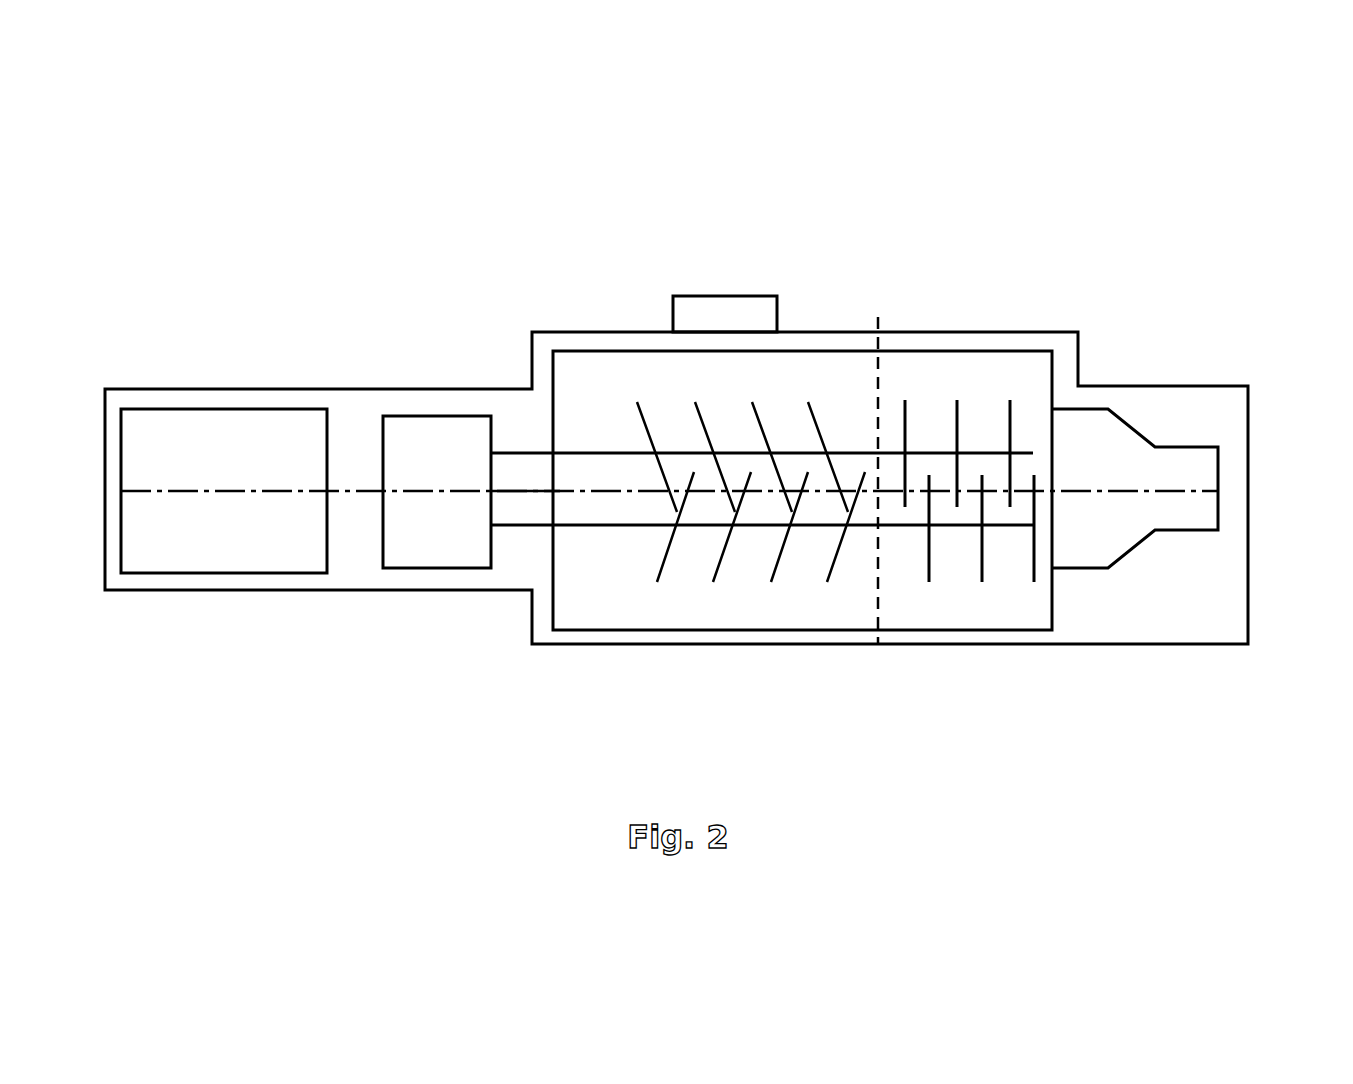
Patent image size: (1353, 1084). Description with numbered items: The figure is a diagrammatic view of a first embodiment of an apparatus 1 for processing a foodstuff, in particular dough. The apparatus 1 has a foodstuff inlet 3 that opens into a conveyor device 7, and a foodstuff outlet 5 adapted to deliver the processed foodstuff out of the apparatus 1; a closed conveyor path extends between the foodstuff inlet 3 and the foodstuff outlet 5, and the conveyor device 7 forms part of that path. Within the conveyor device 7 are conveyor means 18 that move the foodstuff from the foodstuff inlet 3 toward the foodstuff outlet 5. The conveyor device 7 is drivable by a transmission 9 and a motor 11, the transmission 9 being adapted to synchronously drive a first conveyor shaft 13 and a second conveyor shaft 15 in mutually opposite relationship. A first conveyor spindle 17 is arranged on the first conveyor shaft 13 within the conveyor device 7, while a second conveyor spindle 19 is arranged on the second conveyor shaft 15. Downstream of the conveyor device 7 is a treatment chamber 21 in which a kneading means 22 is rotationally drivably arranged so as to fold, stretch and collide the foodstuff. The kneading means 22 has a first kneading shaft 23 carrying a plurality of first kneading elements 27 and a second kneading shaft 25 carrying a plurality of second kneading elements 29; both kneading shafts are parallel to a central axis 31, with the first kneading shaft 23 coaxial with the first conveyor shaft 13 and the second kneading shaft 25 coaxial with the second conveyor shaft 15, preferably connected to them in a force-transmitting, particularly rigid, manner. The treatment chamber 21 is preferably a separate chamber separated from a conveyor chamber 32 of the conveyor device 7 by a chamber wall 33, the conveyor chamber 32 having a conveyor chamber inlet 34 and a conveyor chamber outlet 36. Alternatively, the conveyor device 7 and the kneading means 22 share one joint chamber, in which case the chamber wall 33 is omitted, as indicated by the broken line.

The apparatus 1 is at (505, 245).
The foodstuff inlet 3 is at (714, 285).
The foodstuff outlet 5 is at (1235, 467).
The conveyor device 7 is at (755, 488).
The transmission 9 is at (410, 415).
The motor 11 is at (203, 408).
The first conveyor shaft 13 is at (533, 450).
The second conveyor shaft 15 is at (530, 527).
The first conveyor spindle 17 is at (820, 398).
The conveyor means 18 is at (694, 558).
The second conveyor spindle 19 is at (833, 570).
The treatment chamber 21 is at (999, 503).
The kneading means 22 is at (949, 558).
The first kneading shaft 23 is at (1023, 447).
The second kneading shaft 25 is at (1013, 527).
The first kneading elements 27 is at (907, 422).
The second kneading elements 29 is at (982, 573).
The central axis 31 is at (1103, 487).
The conveyor chamber 32 is at (557, 403).
The chamber wall 33 is at (880, 392).
The conveyor chamber inlet 34 is at (548, 499).
The conveyor chamber outlet 36 is at (878, 512).